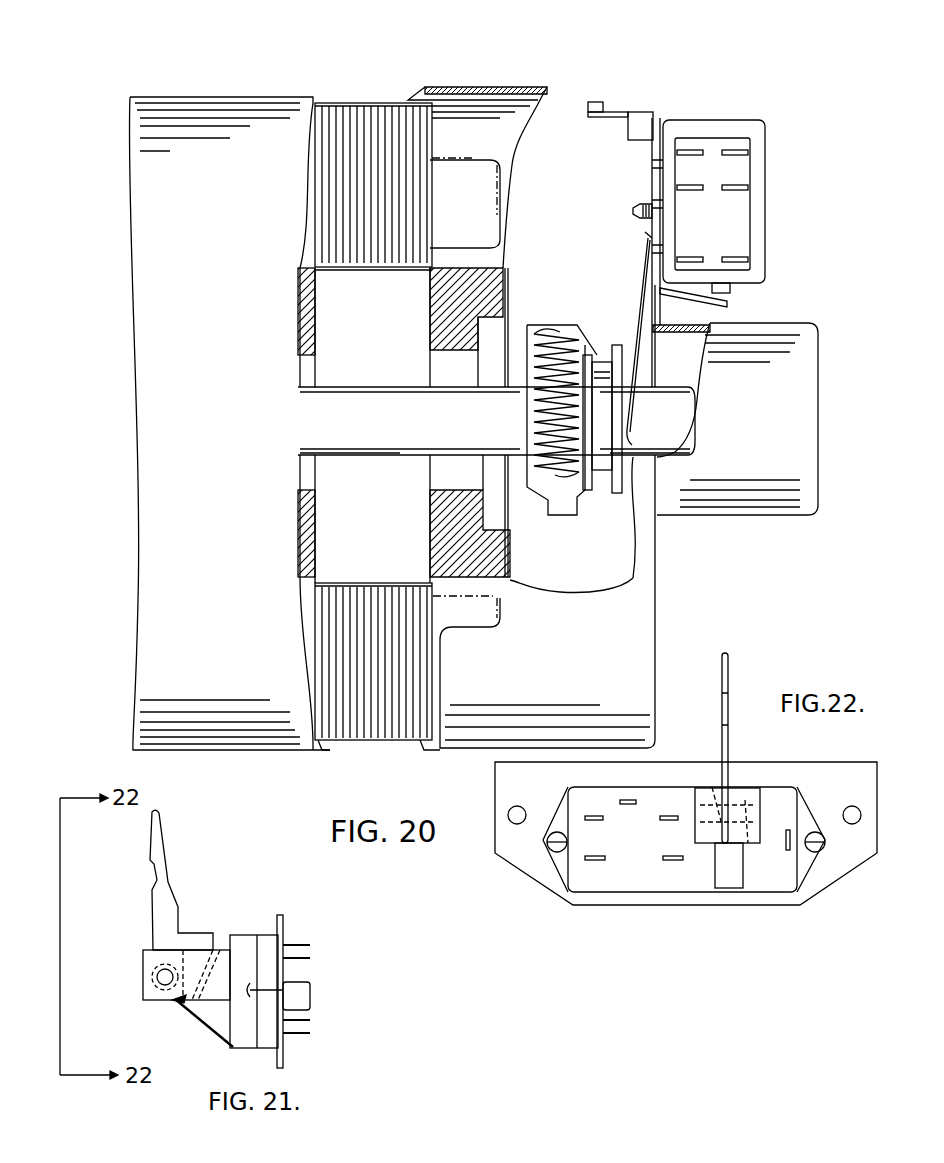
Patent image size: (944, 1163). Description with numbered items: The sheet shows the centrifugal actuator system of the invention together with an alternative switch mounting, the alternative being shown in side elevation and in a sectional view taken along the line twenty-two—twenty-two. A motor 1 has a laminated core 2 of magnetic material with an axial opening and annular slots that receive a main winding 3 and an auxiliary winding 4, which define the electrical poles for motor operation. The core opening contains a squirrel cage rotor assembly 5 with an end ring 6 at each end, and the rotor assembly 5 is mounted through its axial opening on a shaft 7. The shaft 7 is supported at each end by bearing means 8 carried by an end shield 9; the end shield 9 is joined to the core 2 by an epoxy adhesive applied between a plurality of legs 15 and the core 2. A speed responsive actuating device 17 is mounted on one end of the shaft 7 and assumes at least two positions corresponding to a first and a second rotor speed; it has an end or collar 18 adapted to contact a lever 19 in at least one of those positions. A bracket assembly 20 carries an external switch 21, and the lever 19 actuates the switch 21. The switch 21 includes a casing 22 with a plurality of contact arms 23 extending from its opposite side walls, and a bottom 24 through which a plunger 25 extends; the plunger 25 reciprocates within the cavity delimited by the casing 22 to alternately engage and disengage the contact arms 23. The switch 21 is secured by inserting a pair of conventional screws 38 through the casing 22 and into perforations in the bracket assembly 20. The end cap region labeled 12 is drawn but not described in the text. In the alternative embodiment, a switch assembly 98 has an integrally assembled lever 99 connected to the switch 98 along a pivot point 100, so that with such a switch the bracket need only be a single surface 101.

In FIG. 20, the motor 1 is at (397, 70).
In FIG. 20, the laminated core 2 is at (395, 103).
In FIG. 20, the main winding 3 is at (440, 158).
In FIG. 20, the auxiliary winding 4 is at (500, 230).
In FIG. 20, the rotor assembly 5 is at (320, 432).
In FIG. 20, the end ring 6 is at (500, 287).
In FIG. 20, the shaft 7 is at (402, 440).
In FIG. 20, the bearing means 8 is at (742, 492).
In FIG. 20, the end shield 9 is at (660, 548).
In FIG. 20, the end cap 12 is at (800, 458).
In FIG. 20, the legs 15 is at (468, 87).
In FIG. 20, the speed responsive actuating device 17 is at (527, 326).
In FIG. 20, the collar 18 is at (590, 358).
In FIG. 20, the lever 19 is at (633, 305).
In FIG. 20, the bracket assembly 20 is at (645, 120).
In FIG. 20, the external switch 21 is at (740, 121).
In FIG. 20, the casing 22 is at (768, 128).
In FIG. 20, the contact arms 23 is at (742, 180).
In FIG. 20, the bottom 24 is at (732, 292).
In FIG. 20, the plunger 25 is at (725, 302).
In FIG. 20, the screws 38 is at (635, 210).
In FIG. 21, the switch assembly 98 is at (250, 935).
In FIG. 22, the switch assembly 98 is at (768, 888).
In FIG. 21, the lever 99 is at (172, 885).
In FIG. 22, the lever 99 is at (730, 738).
In FIG. 21, the pivot point 100 is at (167, 1000).
In FIG. 21, the single surface 101 is at (285, 935).
In FIG. 22, the single surface 101 is at (533, 867).